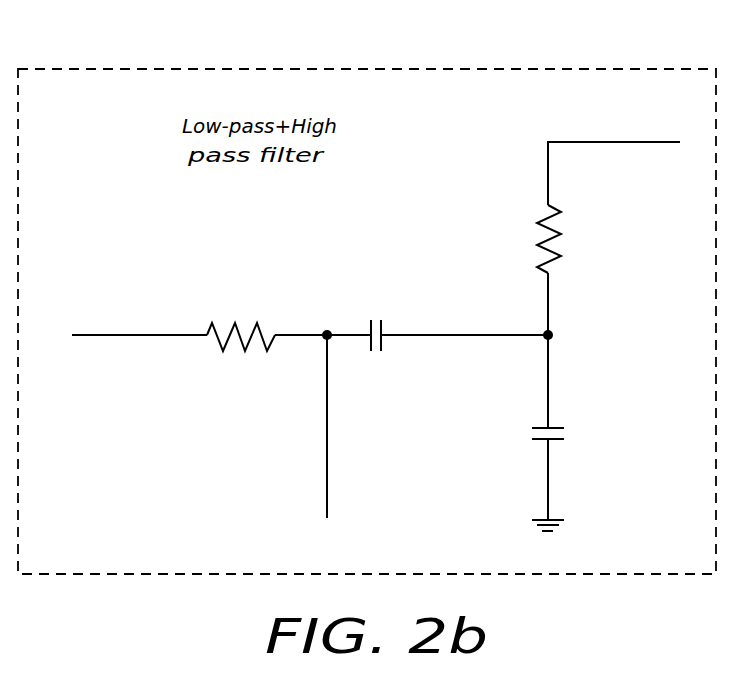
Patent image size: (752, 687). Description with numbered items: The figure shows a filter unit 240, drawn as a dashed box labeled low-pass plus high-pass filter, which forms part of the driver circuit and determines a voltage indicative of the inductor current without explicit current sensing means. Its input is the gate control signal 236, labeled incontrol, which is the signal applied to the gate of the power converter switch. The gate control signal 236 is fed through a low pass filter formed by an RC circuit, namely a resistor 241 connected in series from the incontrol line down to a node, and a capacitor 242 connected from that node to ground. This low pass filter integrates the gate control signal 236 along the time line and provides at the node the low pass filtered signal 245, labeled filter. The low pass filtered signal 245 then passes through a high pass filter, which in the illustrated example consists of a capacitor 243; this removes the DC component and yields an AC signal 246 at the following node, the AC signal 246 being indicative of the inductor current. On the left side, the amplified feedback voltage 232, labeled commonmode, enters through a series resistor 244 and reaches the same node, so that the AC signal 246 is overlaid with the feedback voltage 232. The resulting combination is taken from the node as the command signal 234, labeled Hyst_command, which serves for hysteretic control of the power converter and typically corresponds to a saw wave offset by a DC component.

The filter unit 240 is at (70, 68).
The feedback voltage 232 is at (142, 337).
The resistor 244 is at (242, 327).
The AC signal 246 is at (355, 333).
The capacitor 243 is at (372, 318).
The low pass filtered signal 245 is at (435, 337).
The command signal 234 is at (327, 498).
The gate control signal 236 is at (633, 143).
The resistor 241 is at (542, 234).
The capacitor 242 is at (530, 447).